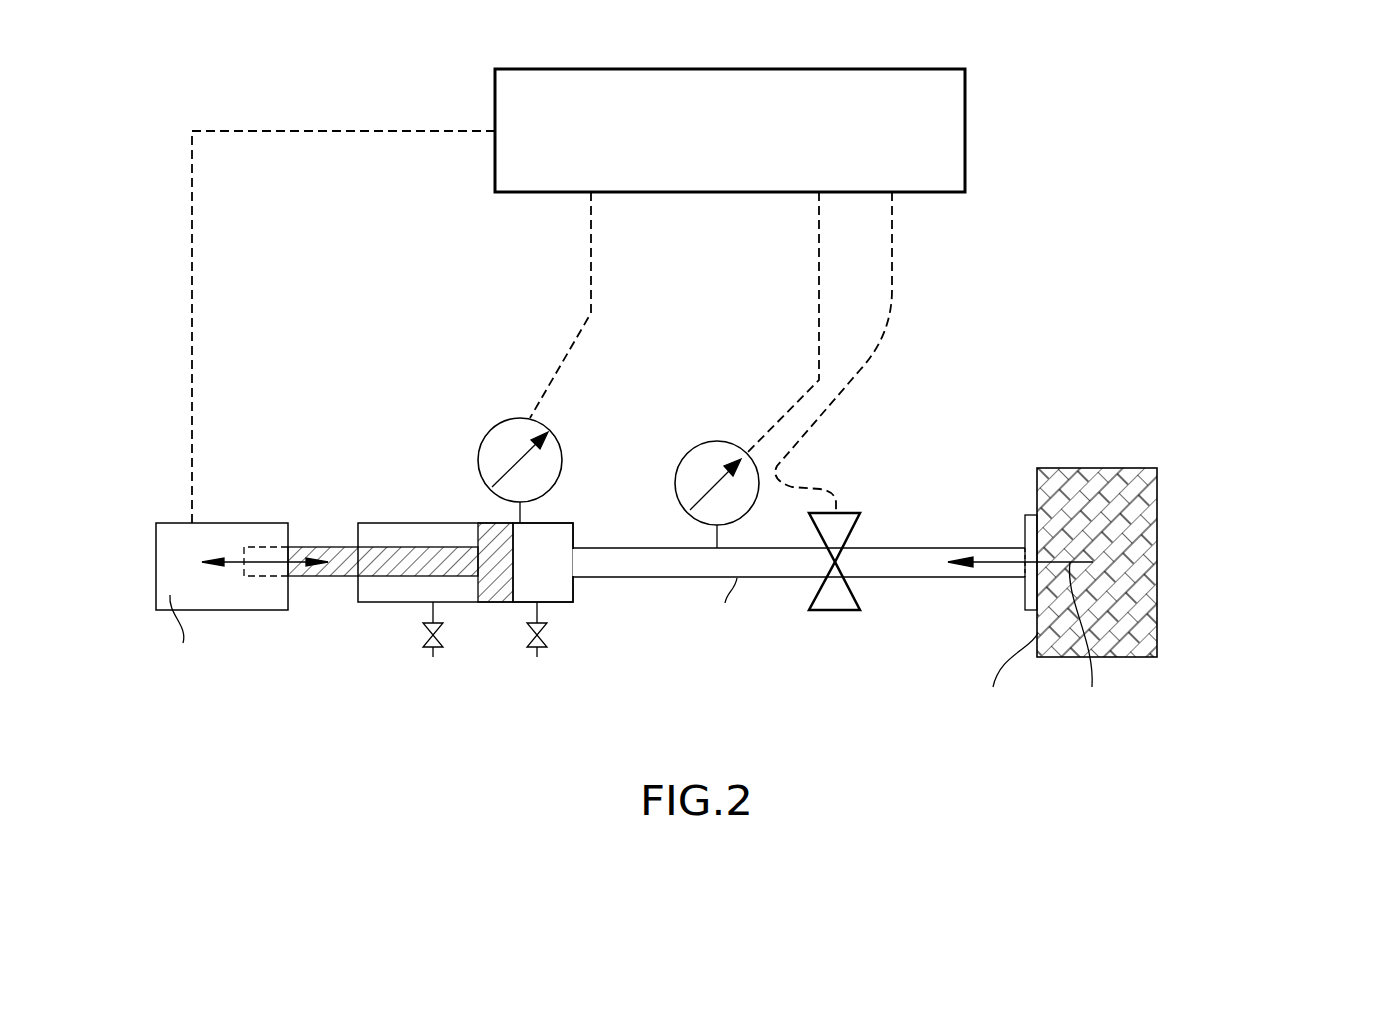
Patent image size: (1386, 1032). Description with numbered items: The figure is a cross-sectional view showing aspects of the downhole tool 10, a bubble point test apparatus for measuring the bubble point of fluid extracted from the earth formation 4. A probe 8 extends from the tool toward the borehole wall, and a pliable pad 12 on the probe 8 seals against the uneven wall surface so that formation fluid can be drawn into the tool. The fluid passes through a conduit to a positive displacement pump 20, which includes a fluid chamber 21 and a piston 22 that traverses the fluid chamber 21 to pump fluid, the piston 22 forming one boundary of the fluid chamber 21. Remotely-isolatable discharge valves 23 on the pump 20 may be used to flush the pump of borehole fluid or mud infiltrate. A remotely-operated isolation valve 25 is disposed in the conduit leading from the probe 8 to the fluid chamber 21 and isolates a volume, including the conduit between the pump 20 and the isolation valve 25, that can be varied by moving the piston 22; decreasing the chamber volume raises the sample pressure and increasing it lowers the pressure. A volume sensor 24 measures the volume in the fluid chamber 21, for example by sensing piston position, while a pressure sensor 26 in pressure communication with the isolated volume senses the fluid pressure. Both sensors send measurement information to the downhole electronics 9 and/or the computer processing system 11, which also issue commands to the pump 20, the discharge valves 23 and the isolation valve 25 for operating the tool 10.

The downhole tool 10 is at (759, 383).
The downhole electronics 9 is at (578, 296).
The computer processing system 11 is at (578, 296).
The positive displacement pump 20 is at (440, 573).
The piston 22 is at (493, 523).
The fluid chamber 21 is at (559, 588).
The discharge valves 23 is at (433, 653).
The volume sensor 24 is at (513, 418).
The pressure sensor 26 is at (772, 395).
The isolation valve 25 is at (833, 612).
The probe 8 is at (998, 577).
The pliable pad 12 is at (1030, 515).
The earth formation 4 is at (1133, 413).